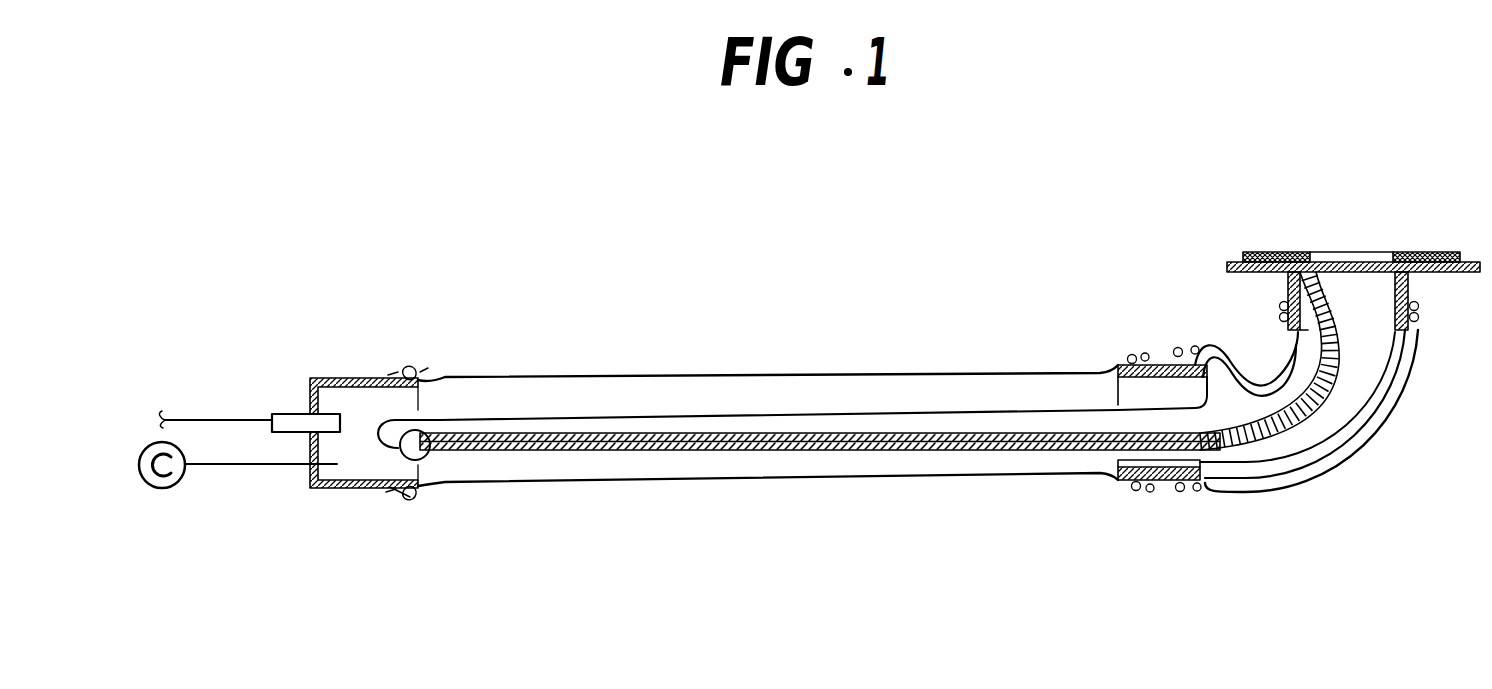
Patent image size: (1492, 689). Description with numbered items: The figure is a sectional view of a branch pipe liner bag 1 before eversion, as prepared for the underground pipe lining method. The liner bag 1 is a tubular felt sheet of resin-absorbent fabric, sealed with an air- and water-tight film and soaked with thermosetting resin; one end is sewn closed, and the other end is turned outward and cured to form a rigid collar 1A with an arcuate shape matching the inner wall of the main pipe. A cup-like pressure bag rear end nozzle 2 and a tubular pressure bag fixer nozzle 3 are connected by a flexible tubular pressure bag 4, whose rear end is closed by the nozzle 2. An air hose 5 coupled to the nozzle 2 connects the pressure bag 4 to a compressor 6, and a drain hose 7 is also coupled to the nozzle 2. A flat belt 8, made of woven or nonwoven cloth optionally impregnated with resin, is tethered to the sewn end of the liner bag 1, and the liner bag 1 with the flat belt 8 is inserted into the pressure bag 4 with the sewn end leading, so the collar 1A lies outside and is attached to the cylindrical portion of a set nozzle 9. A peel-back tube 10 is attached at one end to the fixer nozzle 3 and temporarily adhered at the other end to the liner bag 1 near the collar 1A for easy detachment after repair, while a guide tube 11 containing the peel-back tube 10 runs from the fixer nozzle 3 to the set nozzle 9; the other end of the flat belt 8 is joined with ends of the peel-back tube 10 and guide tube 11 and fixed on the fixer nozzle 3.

The branch pipe liner bag 1 is at (901, 455).
The rigid collar 1A is at (1437, 260).
The pressure bag rear end nozzle 2 is at (345, 490).
The pressure bag fixer nozzle 3 is at (1158, 363).
The pressure bag 4 is at (748, 371).
The air hose 5 is at (247, 467).
The compressor 6 is at (160, 489).
The drain hose 7 is at (228, 417).
The flat belt 8 is at (907, 412).
The set nozzle 9 is at (1460, 273).
The peel-back tube 10 is at (1278, 470).
The guide tube 11 is at (1387, 430).